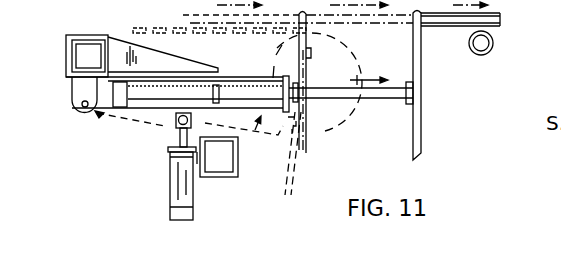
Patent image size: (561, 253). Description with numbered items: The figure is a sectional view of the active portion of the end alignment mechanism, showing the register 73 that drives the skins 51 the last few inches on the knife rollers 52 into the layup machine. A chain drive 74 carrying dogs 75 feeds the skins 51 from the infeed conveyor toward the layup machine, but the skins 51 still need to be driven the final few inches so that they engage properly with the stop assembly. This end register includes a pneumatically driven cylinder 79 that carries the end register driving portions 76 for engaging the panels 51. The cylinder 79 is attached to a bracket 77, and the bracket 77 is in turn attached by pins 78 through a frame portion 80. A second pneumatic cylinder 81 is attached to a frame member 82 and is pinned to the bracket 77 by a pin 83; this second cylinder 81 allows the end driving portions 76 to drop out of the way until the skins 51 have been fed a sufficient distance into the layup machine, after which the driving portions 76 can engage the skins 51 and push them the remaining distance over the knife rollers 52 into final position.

The skins 51 is at (500, 14).
The knife rollers 52 is at (493, 43).
The register 73 is at (331, 143).
The chain drive 74 is at (141, 27).
The dogs 75 is at (182, 26).
The end register driving portions 76 is at (421, 74).
The bracket 77 is at (237, 108).
The pins 78 is at (84, 108).
The pneumatically driven cylinder 79 is at (139, 98).
The frame portion 80 is at (66, 62).
The second pneumatic cylinder 81 is at (182, 182).
The frame member 82 is at (208, 178).
The pin 83 is at (170, 120).